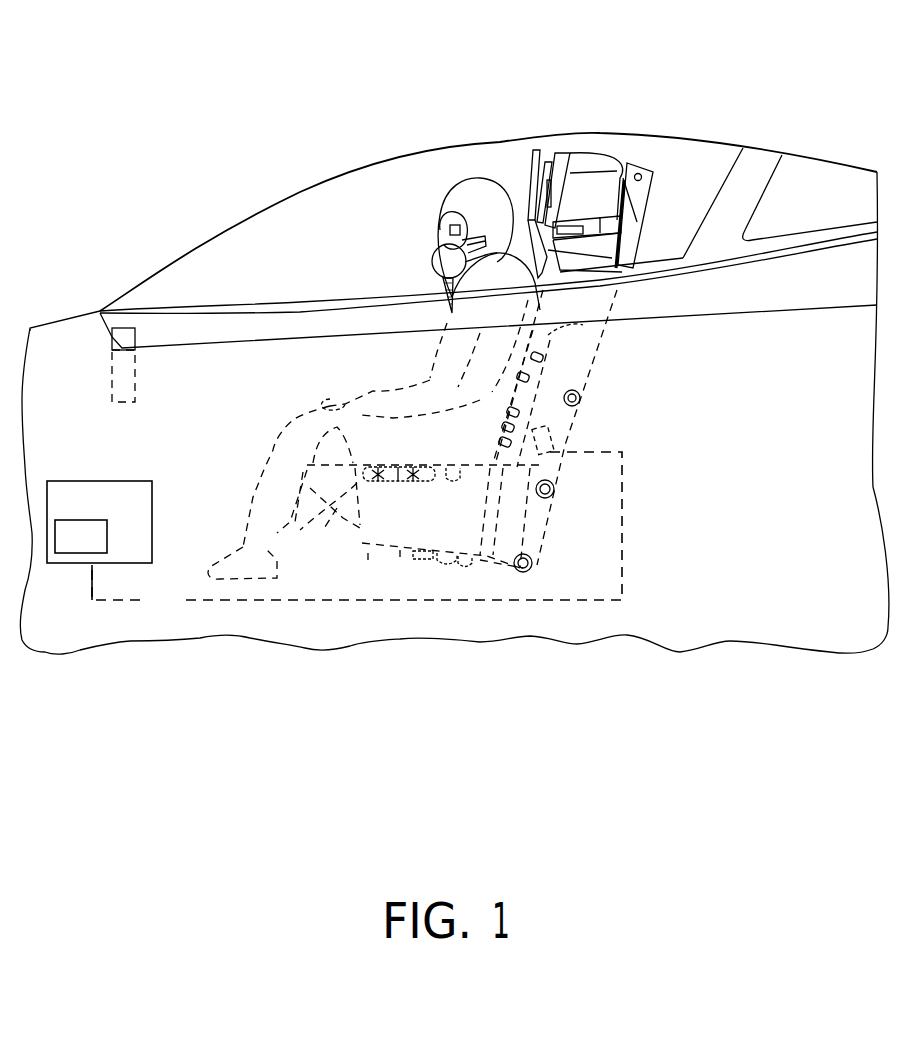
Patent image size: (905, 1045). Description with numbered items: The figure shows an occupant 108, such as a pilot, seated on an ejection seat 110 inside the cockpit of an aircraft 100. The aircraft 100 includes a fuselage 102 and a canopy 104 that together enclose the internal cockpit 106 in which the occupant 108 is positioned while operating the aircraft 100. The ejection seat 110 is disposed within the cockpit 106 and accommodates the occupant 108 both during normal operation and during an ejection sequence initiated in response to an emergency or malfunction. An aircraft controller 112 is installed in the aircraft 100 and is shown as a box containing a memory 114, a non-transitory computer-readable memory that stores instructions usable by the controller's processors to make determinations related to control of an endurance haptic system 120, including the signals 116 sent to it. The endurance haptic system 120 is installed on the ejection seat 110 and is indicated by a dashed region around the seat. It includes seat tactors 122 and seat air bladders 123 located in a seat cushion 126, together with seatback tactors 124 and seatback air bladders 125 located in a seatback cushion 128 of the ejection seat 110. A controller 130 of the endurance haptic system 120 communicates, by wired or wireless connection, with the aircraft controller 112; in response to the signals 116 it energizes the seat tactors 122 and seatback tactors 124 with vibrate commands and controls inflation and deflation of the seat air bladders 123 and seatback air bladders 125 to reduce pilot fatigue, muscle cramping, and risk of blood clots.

The aircraft 100 is at (177, 140).
The fuselage 102 is at (783, 519).
The canopy 104 is at (414, 158).
The cockpit 106 is at (230, 260).
The occupant 108 is at (480, 207).
The ejection seat 110 is at (583, 312).
The aircraft controller 112 is at (112, 507).
The memory 114 is at (96, 549).
The signals 116 is at (132, 589).
The endurance haptic system 120 is at (648, 451).
The seat tactors 122 is at (422, 482).
The seat air bladders 123 is at (413, 482).
The seatback tactors 124 is at (533, 365).
The seatback air bladders 125 is at (587, 396).
The seat cushion 126 is at (472, 483).
The seatback cushion 128 is at (550, 332).
The controller 130 is at (562, 434).